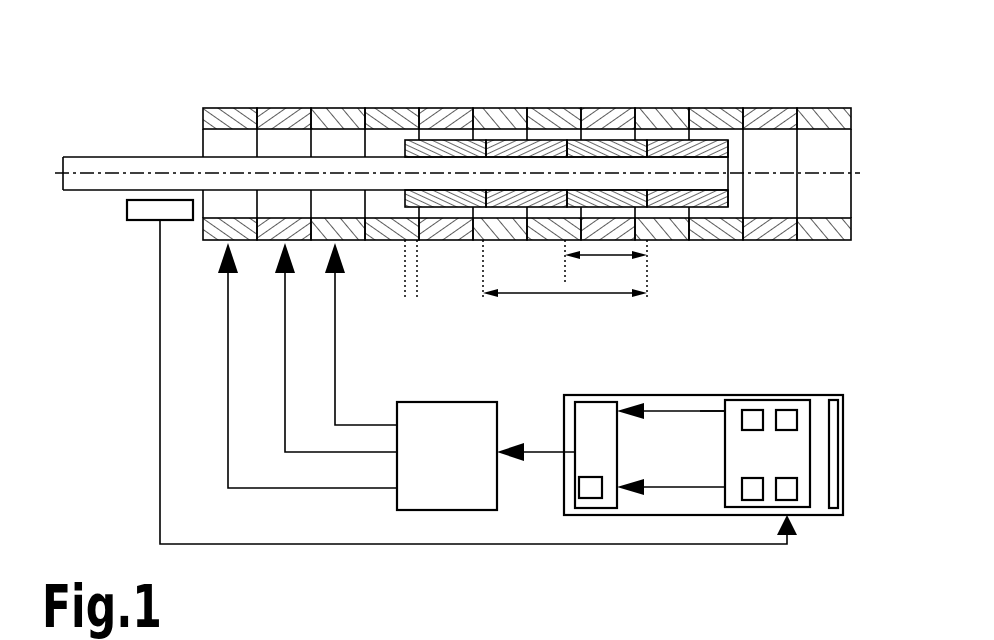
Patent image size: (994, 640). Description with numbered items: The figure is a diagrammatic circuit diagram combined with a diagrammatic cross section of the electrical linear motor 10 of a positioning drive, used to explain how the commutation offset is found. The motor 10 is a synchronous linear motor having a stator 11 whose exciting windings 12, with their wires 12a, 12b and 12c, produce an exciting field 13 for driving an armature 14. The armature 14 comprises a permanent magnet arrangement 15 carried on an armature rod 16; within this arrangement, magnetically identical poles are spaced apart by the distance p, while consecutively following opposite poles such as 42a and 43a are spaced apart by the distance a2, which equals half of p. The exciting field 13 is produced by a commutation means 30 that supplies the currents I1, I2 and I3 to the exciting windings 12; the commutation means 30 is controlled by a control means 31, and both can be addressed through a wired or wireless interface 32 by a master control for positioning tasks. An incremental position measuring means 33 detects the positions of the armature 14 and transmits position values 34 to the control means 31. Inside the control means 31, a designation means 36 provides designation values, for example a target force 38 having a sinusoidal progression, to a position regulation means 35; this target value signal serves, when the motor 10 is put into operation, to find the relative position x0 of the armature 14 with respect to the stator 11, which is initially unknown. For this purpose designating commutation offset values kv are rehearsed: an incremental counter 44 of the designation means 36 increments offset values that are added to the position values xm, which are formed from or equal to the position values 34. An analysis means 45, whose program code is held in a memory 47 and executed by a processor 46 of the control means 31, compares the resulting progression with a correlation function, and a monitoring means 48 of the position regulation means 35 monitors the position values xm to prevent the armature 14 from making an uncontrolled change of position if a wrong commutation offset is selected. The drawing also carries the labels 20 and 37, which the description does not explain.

The electrical linear motor 10 is at (758, 589).
The stator 11 is at (527, 120).
The exciting windings 12 is at (527, 120).
The wire of exciting windings 12a is at (228, 108).
The wire of exciting windings 12b is at (285, 108).
The wire of exciting windings 12c is at (343, 108).
The exciting field 13 is at (571, 113).
The armature 14 is at (727, 165).
The permanent magnet arrangement 15 is at (611, 139).
The armature rod 16 is at (103, 157).
The drive unit 20 is at (603, 636).
The commutation means 30 is at (455, 408).
The control means 31 is at (816, 510).
The interface 32 is at (703, 451).
The incremental position measuring means 33 is at (132, 222).
The position values 34 is at (383, 545).
The position regulation means 35 is at (590, 412).
The designation means 36 is at (805, 400).
The data signal 37 is at (701, 395).
The target force 38 is at (655, 411).
The magnetic pole 42a is at (458, 108).
The magnetic pole 43a is at (540, 108).
The incremental counter 44 is at (787, 478).
The analysis means 45 is at (750, 478).
The processor 46 is at (750, 410).
The memory 47 is at (787, 410).
The monitoring means 48 is at (588, 477).
The current I1 is at (228, 302).
The current I2 is at (285, 302).
The current I3 is at (335, 302).
The relative position of the armature x0 is at (410, 297).
The distance apart of magnetically identical poles p is at (523, 292).
The distance between consecutive opposite poles a2 is at (612, 257).
The designating commutation offset value kv is at (665, 487).
The position values xm is at (523, 545).